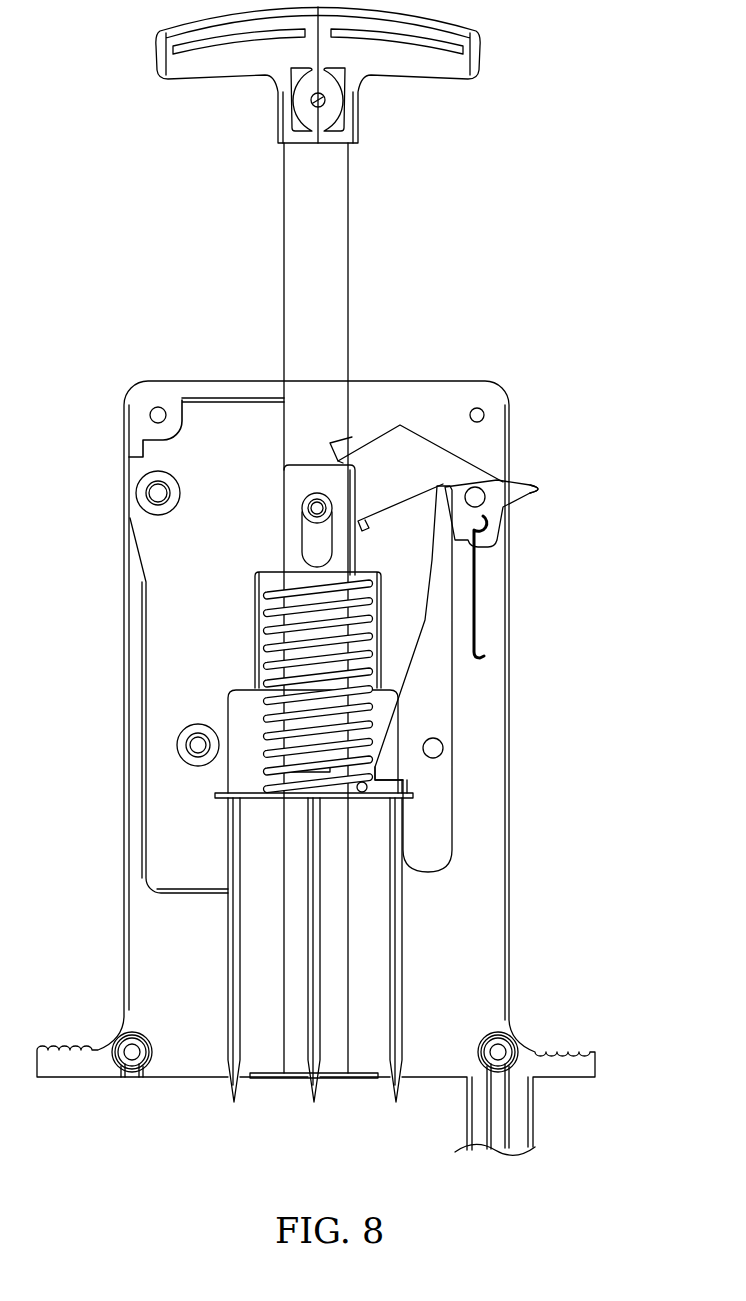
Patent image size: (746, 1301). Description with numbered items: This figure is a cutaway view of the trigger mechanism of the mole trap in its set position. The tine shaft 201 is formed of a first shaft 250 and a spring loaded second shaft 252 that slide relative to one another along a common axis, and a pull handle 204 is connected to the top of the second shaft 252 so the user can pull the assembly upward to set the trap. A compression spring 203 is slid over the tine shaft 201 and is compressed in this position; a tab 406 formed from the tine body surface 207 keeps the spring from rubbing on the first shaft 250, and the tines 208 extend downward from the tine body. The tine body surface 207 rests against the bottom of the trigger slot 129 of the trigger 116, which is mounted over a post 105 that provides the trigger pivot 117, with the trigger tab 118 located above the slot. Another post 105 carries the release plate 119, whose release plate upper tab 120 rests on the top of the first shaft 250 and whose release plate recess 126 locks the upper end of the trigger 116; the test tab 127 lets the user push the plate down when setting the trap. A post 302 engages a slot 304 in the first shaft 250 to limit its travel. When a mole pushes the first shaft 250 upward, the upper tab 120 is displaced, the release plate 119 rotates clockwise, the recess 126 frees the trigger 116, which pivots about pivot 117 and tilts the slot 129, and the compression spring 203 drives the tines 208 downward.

The tine shaft 201 is at (380, 257).
The pull handle 204 is at (180, 37).
The second shaft 252 is at (292, 252).
The release plate 119 is at (414, 438).
The release plate upper tab 120 is at (327, 446).
The first shaft 250 is at (296, 483).
The post 302 is at (304, 512).
The slot 304 is at (312, 547).
The alignment or pivot post 105 is at (159, 498).
The release plate recess 126 is at (442, 489).
The test tab 127 is at (546, 490).
The trigger 116 is at (440, 630).
The trigger pivot 117 is at (444, 744).
The trigger tab 118 is at (380, 768).
The trigger slot 129 is at (404, 787).
The compression spring 203 is at (268, 655).
The tine body surface 207 is at (246, 792).
The tab 406 is at (306, 787).
The tines 208 is at (230, 913).